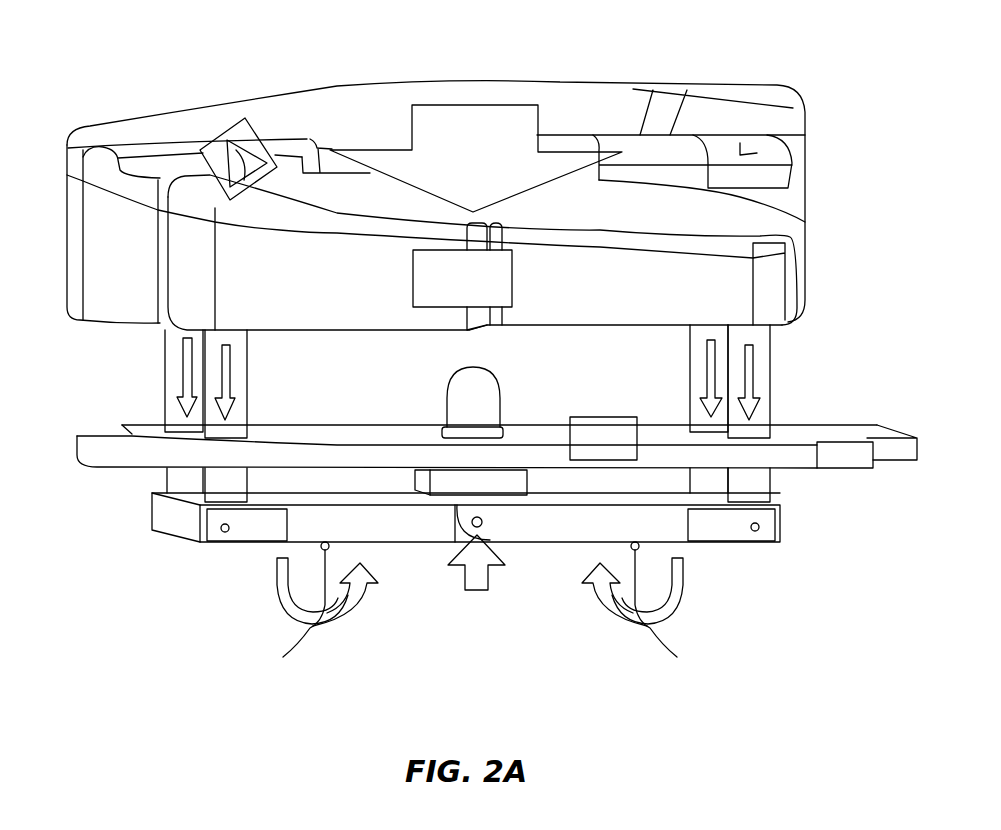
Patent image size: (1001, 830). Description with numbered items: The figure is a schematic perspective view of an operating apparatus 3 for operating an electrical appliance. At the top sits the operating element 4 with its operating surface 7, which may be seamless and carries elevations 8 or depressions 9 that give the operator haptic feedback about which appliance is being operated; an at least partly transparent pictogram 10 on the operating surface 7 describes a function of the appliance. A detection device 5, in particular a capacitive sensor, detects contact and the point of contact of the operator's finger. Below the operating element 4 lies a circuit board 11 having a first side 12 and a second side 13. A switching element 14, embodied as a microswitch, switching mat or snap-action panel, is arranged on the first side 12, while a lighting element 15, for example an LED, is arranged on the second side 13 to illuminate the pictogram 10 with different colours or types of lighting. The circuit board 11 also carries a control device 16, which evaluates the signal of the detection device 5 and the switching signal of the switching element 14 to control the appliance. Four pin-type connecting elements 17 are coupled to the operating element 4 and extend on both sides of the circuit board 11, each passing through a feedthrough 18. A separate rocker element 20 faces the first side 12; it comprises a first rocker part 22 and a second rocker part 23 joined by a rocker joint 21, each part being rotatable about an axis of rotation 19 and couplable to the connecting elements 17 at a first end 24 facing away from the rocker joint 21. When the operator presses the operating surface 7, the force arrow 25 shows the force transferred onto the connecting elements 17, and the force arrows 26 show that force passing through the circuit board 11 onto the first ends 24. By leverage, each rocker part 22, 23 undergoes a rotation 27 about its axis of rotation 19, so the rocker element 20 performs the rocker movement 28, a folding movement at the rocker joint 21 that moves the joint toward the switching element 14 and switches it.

The operating apparatus 3 is at (113, 55).
The operating element 4 is at (73, 238).
The detection device 5 is at (427, 278).
The operating surface 7 is at (742, 155).
The elevations 8 is at (271, 92).
The depressions 9 is at (344, 140).
The pictogram 10 is at (220, 140).
The circuit board 11 is at (803, 458).
The first side 12 is at (273, 473).
The second side 13 is at (138, 413).
The switching element 14 is at (493, 485).
The lighting element 15 is at (483, 382).
The control device 16 is at (603, 423).
The connecting element 17 is at (167, 388).
The feedthrough 18 is at (172, 420).
The axis of rotation 19 is at (283, 657).
The rocker element 20 is at (397, 528).
The rocker joint 21 is at (482, 527).
The first rocker part 22 is at (292, 615).
The second rocker part 23 is at (670, 616).
The first end 24 is at (192, 555).
The force arrow 25 is at (474, 115).
The force arrows 26 is at (180, 357).
The rotation 27 is at (355, 632).
The rocker movement 28 is at (473, 592).